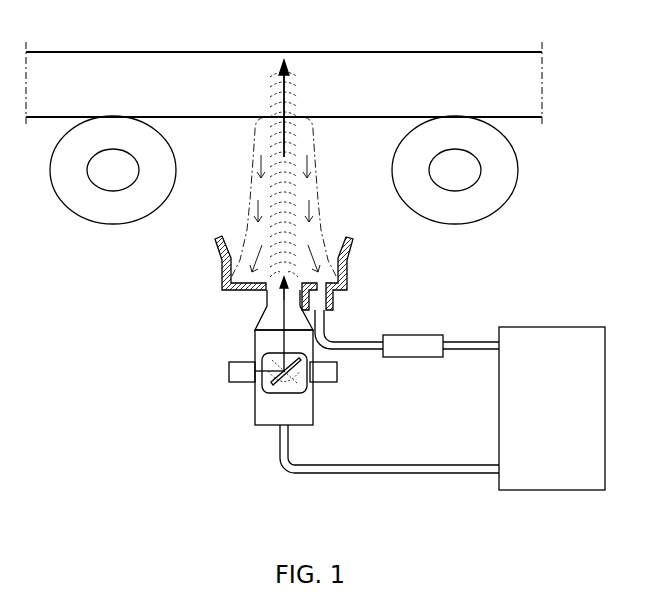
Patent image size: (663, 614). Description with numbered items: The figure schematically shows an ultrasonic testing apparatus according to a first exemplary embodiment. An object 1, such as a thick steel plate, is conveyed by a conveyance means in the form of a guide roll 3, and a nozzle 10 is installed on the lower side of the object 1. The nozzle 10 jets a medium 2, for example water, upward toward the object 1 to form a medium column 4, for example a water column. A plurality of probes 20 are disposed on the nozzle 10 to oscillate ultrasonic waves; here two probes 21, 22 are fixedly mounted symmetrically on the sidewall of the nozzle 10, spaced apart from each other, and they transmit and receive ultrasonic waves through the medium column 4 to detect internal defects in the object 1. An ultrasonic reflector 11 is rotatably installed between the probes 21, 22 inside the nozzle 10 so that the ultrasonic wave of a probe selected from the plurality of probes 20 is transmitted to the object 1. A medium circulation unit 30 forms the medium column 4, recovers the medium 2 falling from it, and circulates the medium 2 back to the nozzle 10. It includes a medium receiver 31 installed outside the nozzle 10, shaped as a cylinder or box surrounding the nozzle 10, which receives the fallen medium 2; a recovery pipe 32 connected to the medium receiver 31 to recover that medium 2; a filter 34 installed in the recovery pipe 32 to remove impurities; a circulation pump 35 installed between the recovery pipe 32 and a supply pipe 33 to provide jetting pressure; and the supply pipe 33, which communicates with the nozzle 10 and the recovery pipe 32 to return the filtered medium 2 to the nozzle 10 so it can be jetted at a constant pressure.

The object 1 is at (105, 65).
The medium 2 is at (310, 209).
The guide roll 3 is at (519, 155).
The medium column 4 is at (255, 190).
The nozzle 10 is at (255, 336).
The ultrasonic reflector 11 is at (300, 375).
The plurality of probes 20 is at (260, 371).
The probe 21 is at (229, 372).
The probe 22 is at (337, 372).
The medium circulation unit 30 is at (442, 410).
The medium receiver 31 is at (347, 272).
The recovery pipe 32 is at (352, 343).
The supply pipe 33 is at (405, 475).
The filter 34 is at (400, 335).
The circulation pump 35 is at (580, 490).